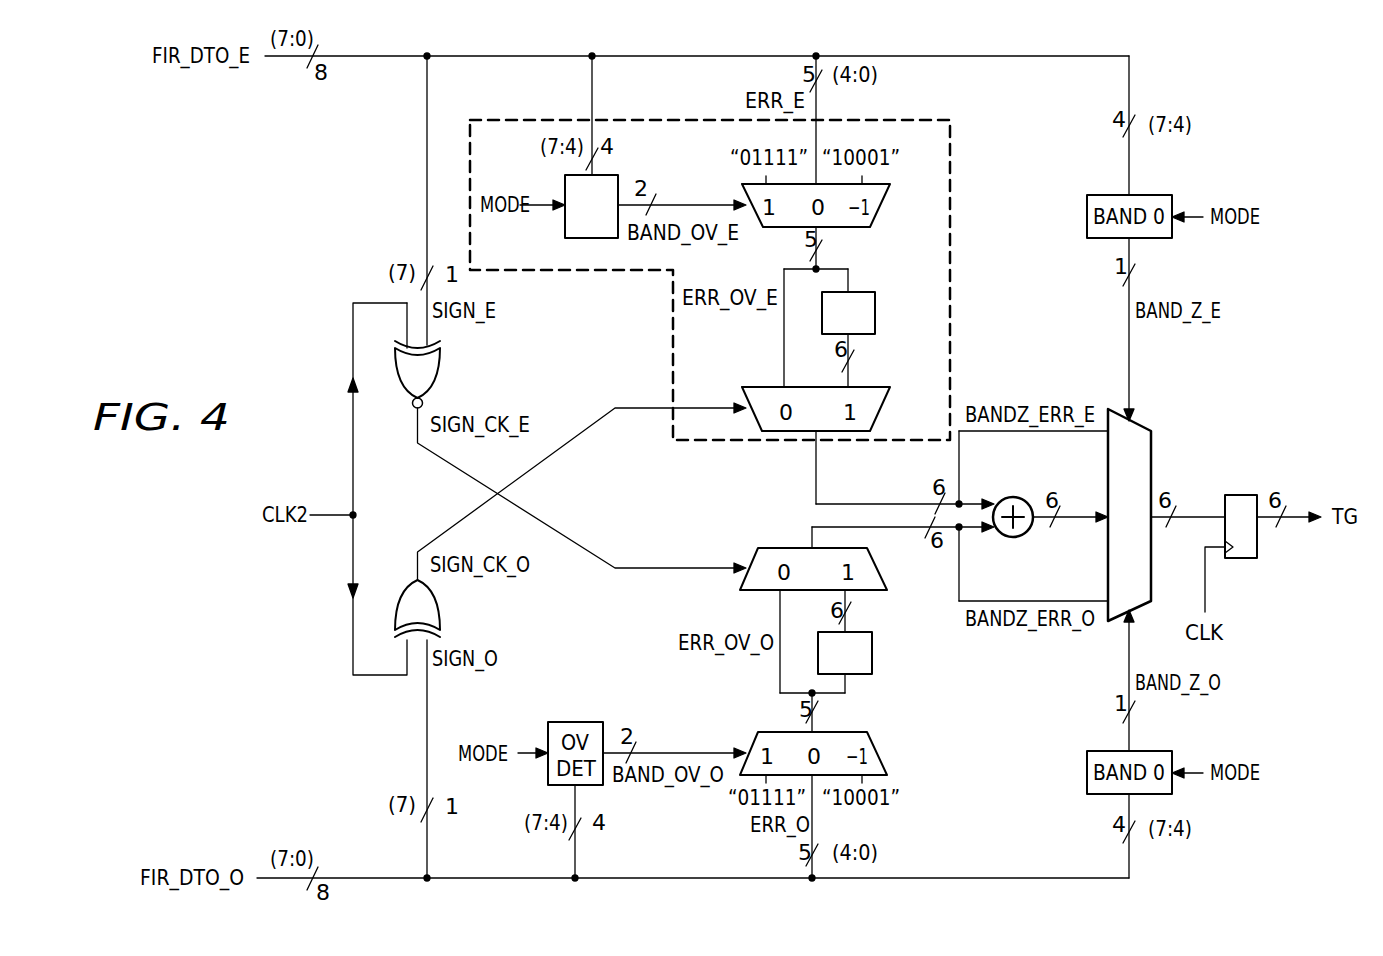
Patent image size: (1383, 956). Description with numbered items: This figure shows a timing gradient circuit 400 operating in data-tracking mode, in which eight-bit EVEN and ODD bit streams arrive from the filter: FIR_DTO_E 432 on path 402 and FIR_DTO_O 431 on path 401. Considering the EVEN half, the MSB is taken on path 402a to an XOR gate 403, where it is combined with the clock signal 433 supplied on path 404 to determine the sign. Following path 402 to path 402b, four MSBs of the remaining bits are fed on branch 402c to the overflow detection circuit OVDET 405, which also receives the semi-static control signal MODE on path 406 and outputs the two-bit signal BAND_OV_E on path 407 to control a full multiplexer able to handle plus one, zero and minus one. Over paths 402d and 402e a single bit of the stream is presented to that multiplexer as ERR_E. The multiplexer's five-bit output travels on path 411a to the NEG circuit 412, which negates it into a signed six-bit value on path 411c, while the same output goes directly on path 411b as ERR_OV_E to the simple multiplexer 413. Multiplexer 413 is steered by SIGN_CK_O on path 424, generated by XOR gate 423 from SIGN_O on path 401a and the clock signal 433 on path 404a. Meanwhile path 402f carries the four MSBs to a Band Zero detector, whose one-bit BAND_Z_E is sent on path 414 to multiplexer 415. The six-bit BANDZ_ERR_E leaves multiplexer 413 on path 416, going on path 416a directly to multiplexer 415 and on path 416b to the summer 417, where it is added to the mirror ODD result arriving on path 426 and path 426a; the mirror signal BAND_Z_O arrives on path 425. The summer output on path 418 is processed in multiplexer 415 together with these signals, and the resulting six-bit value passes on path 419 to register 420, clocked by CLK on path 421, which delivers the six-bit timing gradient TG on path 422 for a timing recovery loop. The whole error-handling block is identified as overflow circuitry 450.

The data-tracking mode timing gradient circuit 400 is at (1336, 140).
The path 401 is at (373, 877).
The path 401a is at (427, 770).
The path 402 is at (377, 58).
The path 402a is at (427, 194).
The path 402b is at (482, 58).
The bits (7:4) line to overflow detector 402c is at (592, 72).
The path 402d is at (698, 58).
The path 402e is at (817, 96).
The path 402f is at (1018, 58).
The XOR gate 403 is at (442, 364).
The path 404 is at (353, 418).
The path 404a is at (353, 560).
The overflow detection circuit OVDET 405 is at (565, 192).
The path 406 is at (546, 216).
The path 407 is at (700, 198).
The path 411a is at (848, 280).
The path 411b is at (784, 328).
The path 411c is at (848, 382).
The circuit NEG 412 is at (876, 316).
The simple multiplexer 413 is at (876, 408).
The path 414 is at (1129, 378).
The multiplexer 415 is at (1140, 424).
The path 416 is at (816, 470).
The path 416a is at (1084, 434).
The path 416b is at (882, 503).
The summer 417 is at (1010, 494).
The path 418 is at (1084, 528).
The path 419 is at (1196, 514).
The register 420 is at (1243, 494).
The path 421 is at (1206, 590).
The TG output line 422 is at (1288, 528).
The XOR gate 423 is at (441, 622).
The path 424 is at (455, 525).
The path 425 is at (1129, 654).
The path 426 is at (812, 538).
The path 426a is at (1024, 600).
The FIR_DTO_O 431 is at (190, 840).
The FIR_DTO_E 432 is at (205, 86).
The CLK2 433 is at (330, 513).
The overflow circuitry 450 is at (951, 284).